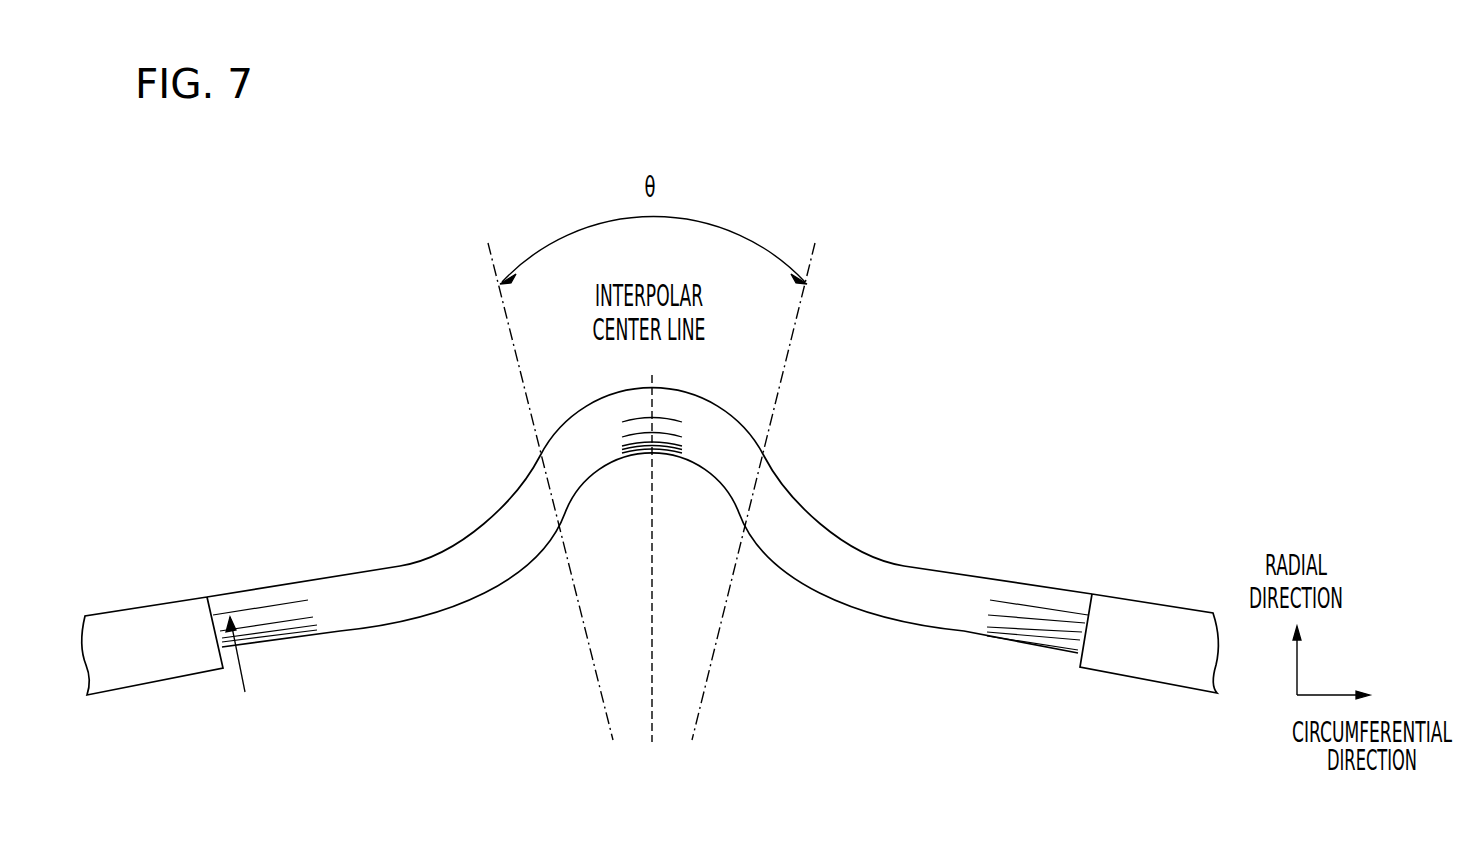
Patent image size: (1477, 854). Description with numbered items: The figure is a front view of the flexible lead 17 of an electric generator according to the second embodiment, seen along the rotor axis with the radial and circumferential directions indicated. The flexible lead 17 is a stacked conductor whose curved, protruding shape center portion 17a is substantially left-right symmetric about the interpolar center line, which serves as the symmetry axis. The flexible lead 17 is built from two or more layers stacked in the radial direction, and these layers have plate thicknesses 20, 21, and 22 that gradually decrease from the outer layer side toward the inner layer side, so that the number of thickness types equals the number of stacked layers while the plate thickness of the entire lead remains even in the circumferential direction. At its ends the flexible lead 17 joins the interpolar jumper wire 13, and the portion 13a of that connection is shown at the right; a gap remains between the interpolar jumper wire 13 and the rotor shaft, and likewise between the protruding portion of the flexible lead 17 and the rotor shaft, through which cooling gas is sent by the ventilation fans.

The interpolar jumper wire 13 is at (970, 652).
The core sheet portion 13a is at (1152, 658).
The flexible lead 17 is at (877, 575).
The shape center portion 17a is at (742, 450).
The plate thickness 20 is at (222, 592).
The plate thickness 21 is at (274, 692).
The plate thickness 22 is at (306, 699).